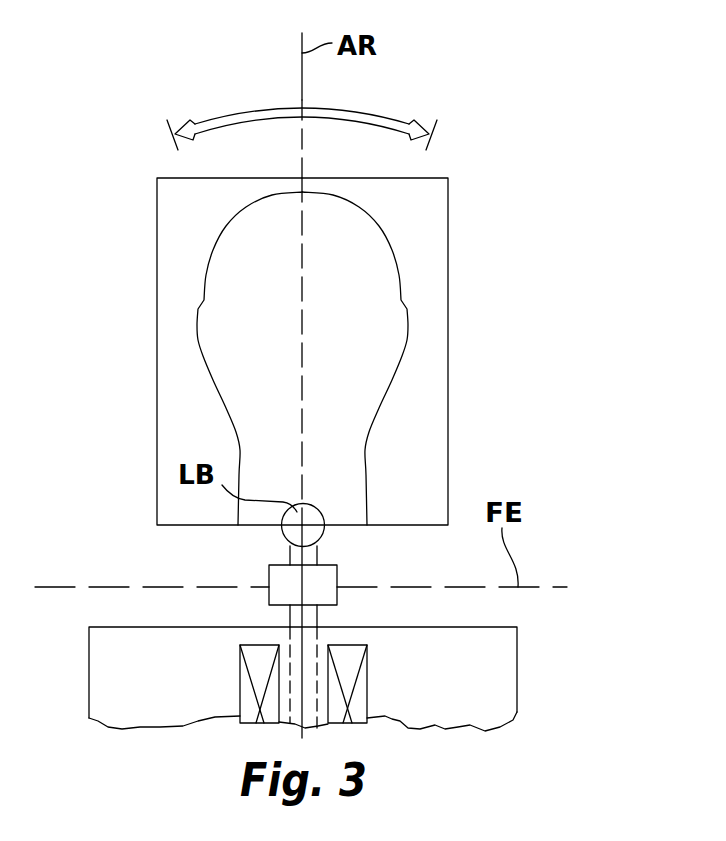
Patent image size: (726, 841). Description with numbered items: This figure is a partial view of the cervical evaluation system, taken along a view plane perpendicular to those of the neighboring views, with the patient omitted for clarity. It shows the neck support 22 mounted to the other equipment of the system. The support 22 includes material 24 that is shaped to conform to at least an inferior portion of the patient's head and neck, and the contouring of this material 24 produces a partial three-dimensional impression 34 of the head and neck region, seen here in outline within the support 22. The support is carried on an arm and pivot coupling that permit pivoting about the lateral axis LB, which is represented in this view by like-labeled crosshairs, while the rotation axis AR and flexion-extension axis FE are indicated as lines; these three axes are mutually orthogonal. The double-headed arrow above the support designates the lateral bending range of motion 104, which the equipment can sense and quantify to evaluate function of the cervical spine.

The neck support 22 is at (448, 200).
The material 24 is at (208, 230).
The three-dimensional impression 34 is at (391, 246).
The lateral bending range of motion 104 is at (302, 102).